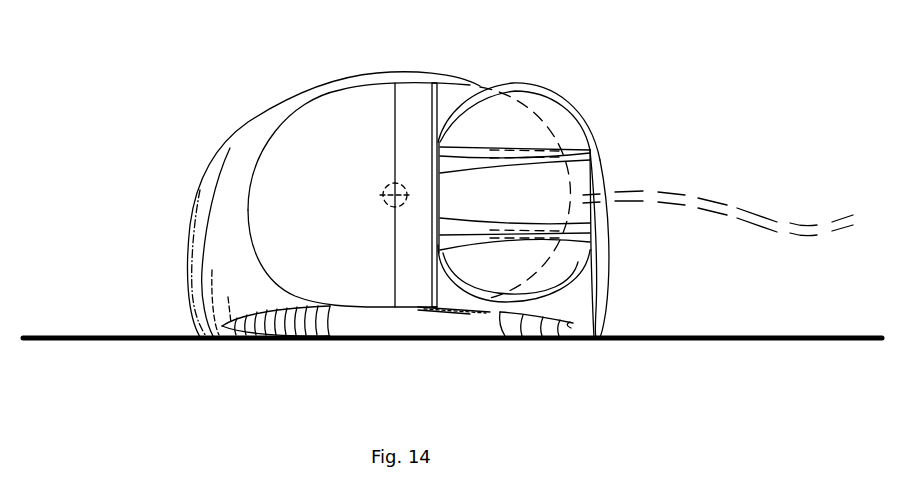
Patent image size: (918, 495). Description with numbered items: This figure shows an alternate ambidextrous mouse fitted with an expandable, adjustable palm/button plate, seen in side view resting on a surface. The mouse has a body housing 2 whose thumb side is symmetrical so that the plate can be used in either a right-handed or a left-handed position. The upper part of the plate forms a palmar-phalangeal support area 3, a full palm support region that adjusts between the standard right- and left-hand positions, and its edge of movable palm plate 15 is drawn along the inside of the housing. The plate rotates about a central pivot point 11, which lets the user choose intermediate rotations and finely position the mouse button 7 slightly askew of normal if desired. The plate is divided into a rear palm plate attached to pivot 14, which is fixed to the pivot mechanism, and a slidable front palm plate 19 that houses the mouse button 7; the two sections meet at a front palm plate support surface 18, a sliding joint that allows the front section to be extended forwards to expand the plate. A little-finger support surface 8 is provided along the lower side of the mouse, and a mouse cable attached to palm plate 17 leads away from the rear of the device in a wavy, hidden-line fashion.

The body housing 2 is at (220, 253).
The palmar-phalangeal support area 3 is at (252, 127).
The mouse button 7 is at (560, 112).
The little-finger support surface 8 is at (386, 323).
The pivot point 11 is at (383, 196).
The rear palm plate attached to pivot 14 is at (327, 112).
The edge of movable palm plate 15 is at (250, 182).
The mouse cable attached to palm plate 17 is at (753, 218).
The front palm plate support surface 18 is at (407, 127).
The slidable front palm plate 19 is at (447, 102).